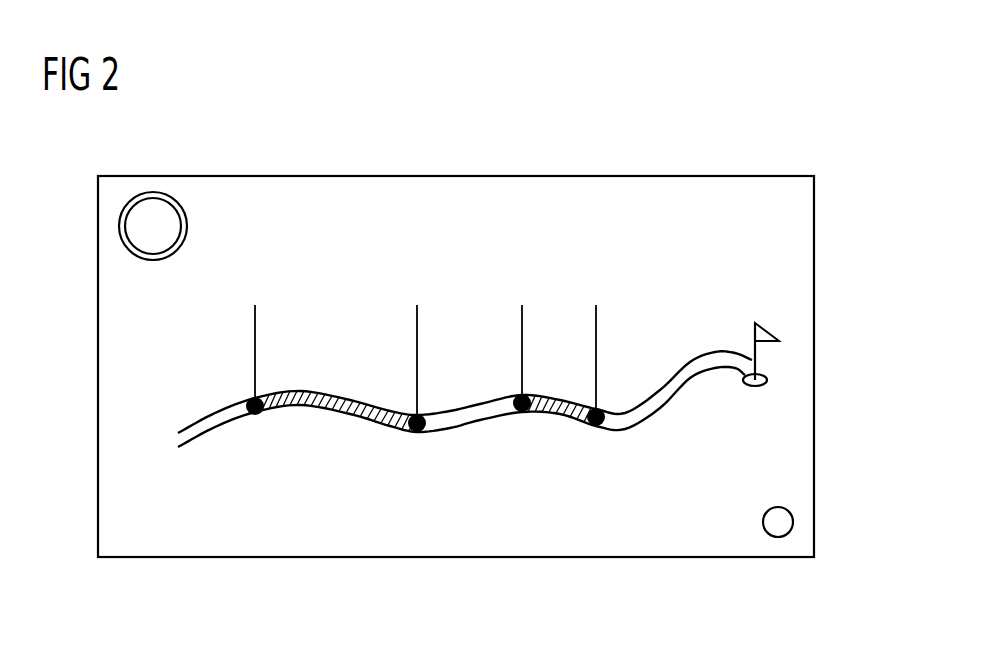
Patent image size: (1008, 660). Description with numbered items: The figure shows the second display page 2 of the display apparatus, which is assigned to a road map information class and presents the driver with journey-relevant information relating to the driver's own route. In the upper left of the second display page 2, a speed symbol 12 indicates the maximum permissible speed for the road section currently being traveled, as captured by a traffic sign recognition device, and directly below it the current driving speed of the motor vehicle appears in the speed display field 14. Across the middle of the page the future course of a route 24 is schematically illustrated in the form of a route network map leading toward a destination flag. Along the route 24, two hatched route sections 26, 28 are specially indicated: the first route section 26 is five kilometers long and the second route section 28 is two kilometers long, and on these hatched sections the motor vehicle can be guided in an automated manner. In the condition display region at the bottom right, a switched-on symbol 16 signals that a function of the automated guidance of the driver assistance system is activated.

The second display page 2 is at (832, 141).
The speed symbol 12 is at (134, 233).
The speed display field 14 is at (158, 307).
The switched-on symbol 16 is at (778, 530).
The route 24 is at (475, 436).
The first route section 26 is at (343, 408).
The second route section 28 is at (560, 414).